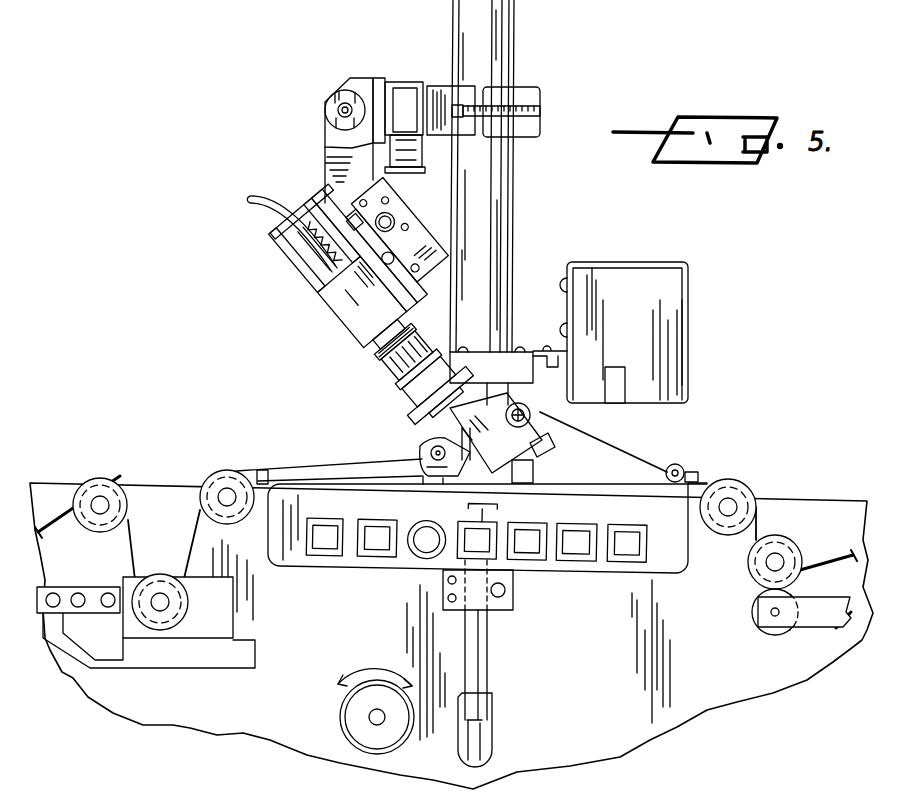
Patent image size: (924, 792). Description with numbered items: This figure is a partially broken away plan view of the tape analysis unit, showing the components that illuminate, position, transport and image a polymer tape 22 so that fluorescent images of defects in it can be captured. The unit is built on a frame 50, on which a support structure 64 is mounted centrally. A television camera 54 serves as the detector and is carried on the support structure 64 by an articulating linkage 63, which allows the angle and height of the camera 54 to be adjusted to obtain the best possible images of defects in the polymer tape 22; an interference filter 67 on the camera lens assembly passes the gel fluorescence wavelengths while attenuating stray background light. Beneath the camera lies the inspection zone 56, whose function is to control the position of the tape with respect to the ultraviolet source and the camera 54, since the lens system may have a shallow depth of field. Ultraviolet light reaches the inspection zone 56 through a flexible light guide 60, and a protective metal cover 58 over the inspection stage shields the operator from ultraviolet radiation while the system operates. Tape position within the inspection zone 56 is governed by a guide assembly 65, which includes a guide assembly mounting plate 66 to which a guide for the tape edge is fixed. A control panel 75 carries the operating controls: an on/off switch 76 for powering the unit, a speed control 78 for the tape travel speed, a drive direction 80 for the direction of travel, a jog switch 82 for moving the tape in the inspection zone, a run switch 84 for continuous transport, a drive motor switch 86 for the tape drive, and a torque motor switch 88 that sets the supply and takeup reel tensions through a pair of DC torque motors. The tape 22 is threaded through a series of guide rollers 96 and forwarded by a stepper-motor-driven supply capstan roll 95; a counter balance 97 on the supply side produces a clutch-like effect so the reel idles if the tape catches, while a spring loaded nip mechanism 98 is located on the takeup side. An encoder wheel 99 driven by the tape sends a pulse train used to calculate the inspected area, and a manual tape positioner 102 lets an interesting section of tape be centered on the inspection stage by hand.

The frame 50 is at (293, 726).
The camera 54 is at (334, 318).
The inspection zone 56 is at (676, 440).
The protective metal cover 58 is at (674, 307).
The flexible light guide 60 is at (484, 670).
The articulating linkage 63 is at (335, 149).
The support structure 64 is at (507, 50).
The guide assembly 65 is at (550, 403).
The guide assembly mounting plate 66 is at (385, 462).
The interference filter 67 is at (428, 450).
The polymer tape 22 is at (290, 470).
The control panel 75 is at (678, 552).
The on/off switch 76 is at (462, 522).
The speed control 78 is at (432, 545).
The drive direction 80 is at (530, 527).
The jog switch 82 is at (587, 556).
The run switch 84 is at (667, 517).
The drive motor switch 86 is at (335, 548).
The torque motor switch 88 is at (385, 508).
The supply capstan roll 95 is at (157, 583).
The guide rollers 96 is at (102, 501).
The counter balance 97 is at (233, 668).
The spring loaded nip mechanism 98 is at (837, 627).
The encoder wheel 99 is at (738, 480).
The manual tape positioner 102 is at (358, 707).